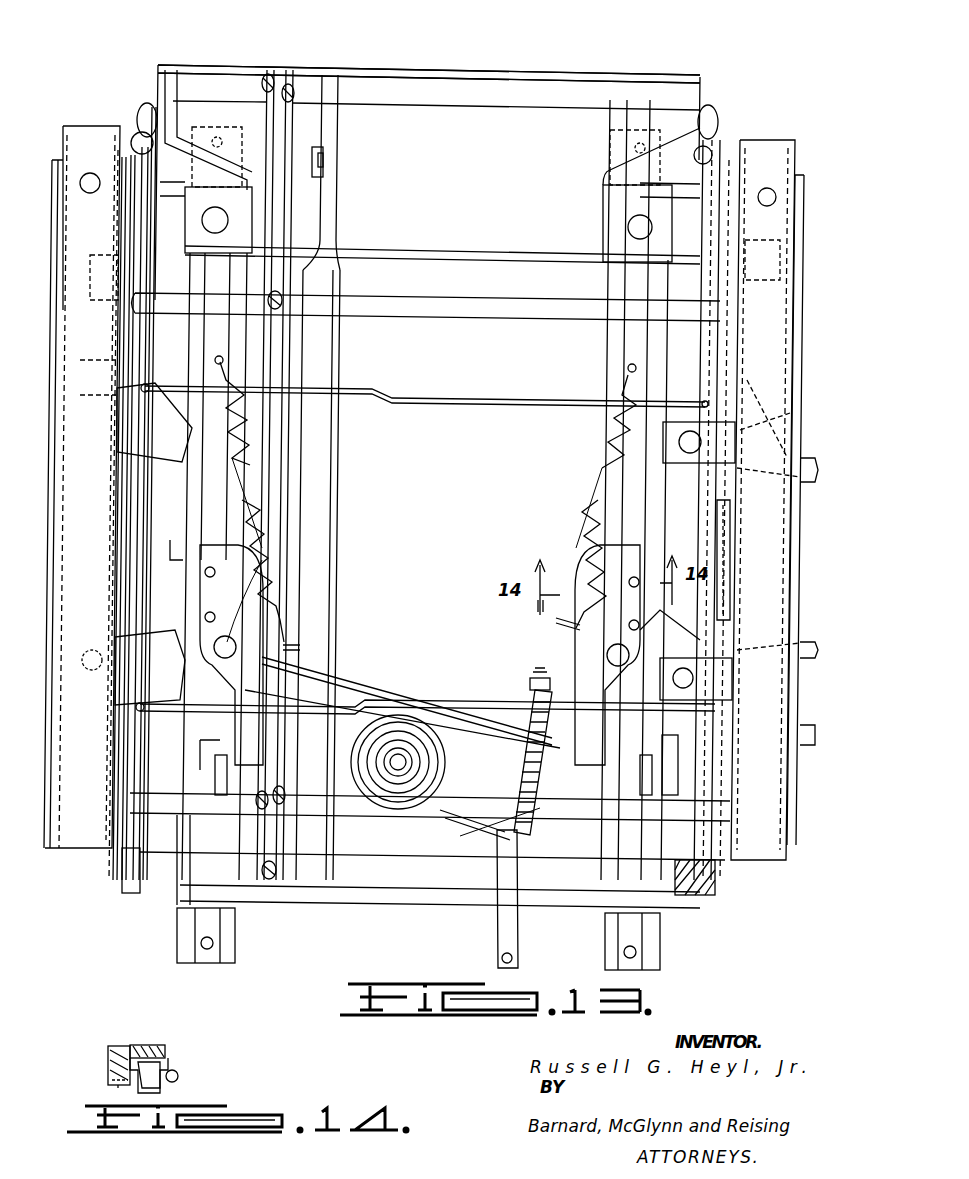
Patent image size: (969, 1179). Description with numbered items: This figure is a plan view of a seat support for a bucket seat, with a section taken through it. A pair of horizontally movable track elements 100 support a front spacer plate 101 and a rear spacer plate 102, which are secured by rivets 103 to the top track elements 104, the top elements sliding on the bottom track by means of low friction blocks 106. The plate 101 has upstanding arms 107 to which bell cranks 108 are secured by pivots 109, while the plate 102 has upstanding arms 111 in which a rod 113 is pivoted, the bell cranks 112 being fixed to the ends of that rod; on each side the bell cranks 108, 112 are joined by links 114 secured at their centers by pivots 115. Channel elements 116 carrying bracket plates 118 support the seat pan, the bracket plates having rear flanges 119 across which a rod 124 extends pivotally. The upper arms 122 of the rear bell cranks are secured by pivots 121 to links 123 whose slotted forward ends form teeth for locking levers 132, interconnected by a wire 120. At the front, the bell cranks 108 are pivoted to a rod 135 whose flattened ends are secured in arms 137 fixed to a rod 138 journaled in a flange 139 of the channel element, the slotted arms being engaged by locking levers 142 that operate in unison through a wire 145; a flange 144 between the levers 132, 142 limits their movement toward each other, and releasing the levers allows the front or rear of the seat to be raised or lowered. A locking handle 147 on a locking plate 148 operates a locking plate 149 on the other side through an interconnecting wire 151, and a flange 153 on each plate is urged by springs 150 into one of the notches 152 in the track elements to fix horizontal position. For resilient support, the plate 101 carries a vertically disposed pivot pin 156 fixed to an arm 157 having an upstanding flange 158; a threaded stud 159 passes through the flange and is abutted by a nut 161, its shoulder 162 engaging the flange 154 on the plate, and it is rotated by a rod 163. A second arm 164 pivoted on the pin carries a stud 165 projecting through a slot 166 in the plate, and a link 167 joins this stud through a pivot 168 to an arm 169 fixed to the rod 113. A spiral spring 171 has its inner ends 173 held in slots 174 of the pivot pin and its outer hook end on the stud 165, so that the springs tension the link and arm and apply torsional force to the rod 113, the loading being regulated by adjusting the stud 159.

In FIG. 13, the track elements 100 is at (232, 935).
In FIG. 14, the track elements 100 is at (180, 1058).
In FIG. 13, the front spacer plate 101 is at (518, 700).
In FIG. 13, the rear spacer plate 102 is at (540, 165).
In FIG. 13, the rivets 103 is at (228, 220).
In FIG. 13, the top track elements 104 is at (180, 935).
In FIG. 14, the top track elements 104 is at (172, 1060).
In FIG. 14, the low friction blocks 106 is at (180, 1076).
In FIG. 13, the upstanding arms 107 is at (200, 740).
In FIG. 13, the bell cranks 108 is at (180, 845).
In FIG. 13, the pivots 109 is at (213, 760).
In FIG. 13, the upstanding arms 111 is at (178, 90).
In FIG. 13, the bell cranks 112 is at (147, 103).
In FIG. 13, the rod 113 is at (542, 85).
In FIG. 13, the links 114 is at (705, 210).
In FIG. 13, the pivots 115 is at (640, 160).
In FIG. 13, the channel elements 116 is at (70, 126).
In FIG. 13, the bracket plates 118 is at (55, 185).
In FIG. 13, the flanges 119 is at (138, 132).
In FIG. 13, the wire 120 is at (450, 402).
In FIG. 13, the pivots 121 is at (200, 158).
In FIG. 13, the upper arms 122 is at (718, 222).
In FIG. 13, the links 123 is at (140, 258).
In FIG. 13, the rod 124 is at (470, 310).
In FIG. 13, the locking levers 132 is at (430, 423).
In FIG. 13, the rod 135 is at (400, 892).
In FIG. 13, the arms 137 is at (705, 760).
In FIG. 13, the rod 138 is at (470, 815).
In FIG. 13, the flange 139 is at (715, 868).
In FIG. 13, the locking levers 142 is at (705, 640).
In FIG. 13, the flange 144 is at (182, 615).
In FIG. 13, the wire 145 is at (335, 690).
In FIG. 13, the locking handle 147 is at (798, 750).
In FIG. 13, the locking plate 148 is at (585, 645).
In FIG. 14, the locking plate 148 is at (110, 1045).
In FIG. 13, the locking plate 149 is at (260, 640).
In FIG. 13, the springs 150 is at (245, 440).
In FIG. 13, the interconnecting wire 151 is at (245, 500).
In FIG. 13, the notches 152 is at (254, 512).
In FIG. 14, the notches 152 is at (140, 1045).
In FIG. 13, the flange 153 is at (262, 533).
In FIG. 14, the flange 153 is at (108, 1070).
In FIG. 13, the flange 154 is at (500, 905).
In FIG. 13, the pivot pin 156 is at (398, 800).
In FIG. 13, the arm 157 is at (515, 735).
In FIG. 13, the upstanding flange 158 is at (505, 800).
In FIG. 13, the threaded stud 159 is at (600, 750).
In FIG. 13, the nut 161 is at (500, 830).
In FIG. 13, the shoulder 162 is at (500, 885).
In FIG. 13, the rod 163 is at (500, 960).
In FIG. 13, the second arm 164 is at (400, 852).
In FIG. 13, the stud 165 is at (425, 772).
In FIG. 13, the slot 166 is at (300, 680).
In FIG. 13, the link 167 is at (270, 580).
In FIG. 13, the pivot 168 is at (340, 162).
In FIG. 13, the arm 169 is at (340, 132).
In FIG. 13, the spiral spring 171 is at (430, 720).
In FIG. 13, the inner ends 173 is at (420, 752).
In FIG. 13, the slots 174 is at (398, 750).